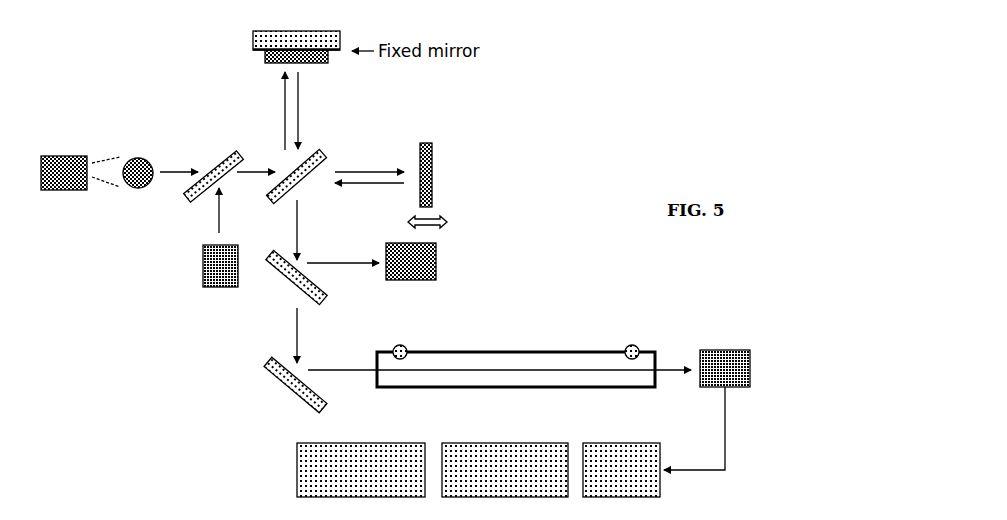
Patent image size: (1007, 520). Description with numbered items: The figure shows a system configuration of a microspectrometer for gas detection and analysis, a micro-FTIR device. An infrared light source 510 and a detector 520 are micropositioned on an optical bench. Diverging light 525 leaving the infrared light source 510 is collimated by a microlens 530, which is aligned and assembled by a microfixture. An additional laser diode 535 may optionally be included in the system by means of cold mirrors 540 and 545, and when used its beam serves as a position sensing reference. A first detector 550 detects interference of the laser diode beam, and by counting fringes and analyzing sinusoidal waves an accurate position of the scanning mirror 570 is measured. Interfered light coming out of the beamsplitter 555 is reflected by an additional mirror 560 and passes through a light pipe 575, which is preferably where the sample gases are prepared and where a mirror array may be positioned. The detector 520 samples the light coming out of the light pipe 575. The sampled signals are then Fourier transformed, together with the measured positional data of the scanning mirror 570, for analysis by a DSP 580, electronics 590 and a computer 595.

The infrared light source 510 is at (60, 155).
The detector 520 is at (753, 363).
The diverging light 525 is at (103, 187).
The microlens 530 is at (136, 190).
The laser diode 535 is at (201, 255).
The cold mirror 540 is at (210, 148).
The cold mirror 545 is at (349, 294).
The first detector 550 is at (439, 265).
The beamsplitter 555 is at (335, 144).
The additional mirror 560 is at (276, 390).
The scanning mirror 570 is at (441, 138).
The light pipe 575 is at (508, 380).
The DSP 580 is at (621, 470).
The electronics 590 is at (505, 470).
The computer 595 is at (361, 470).